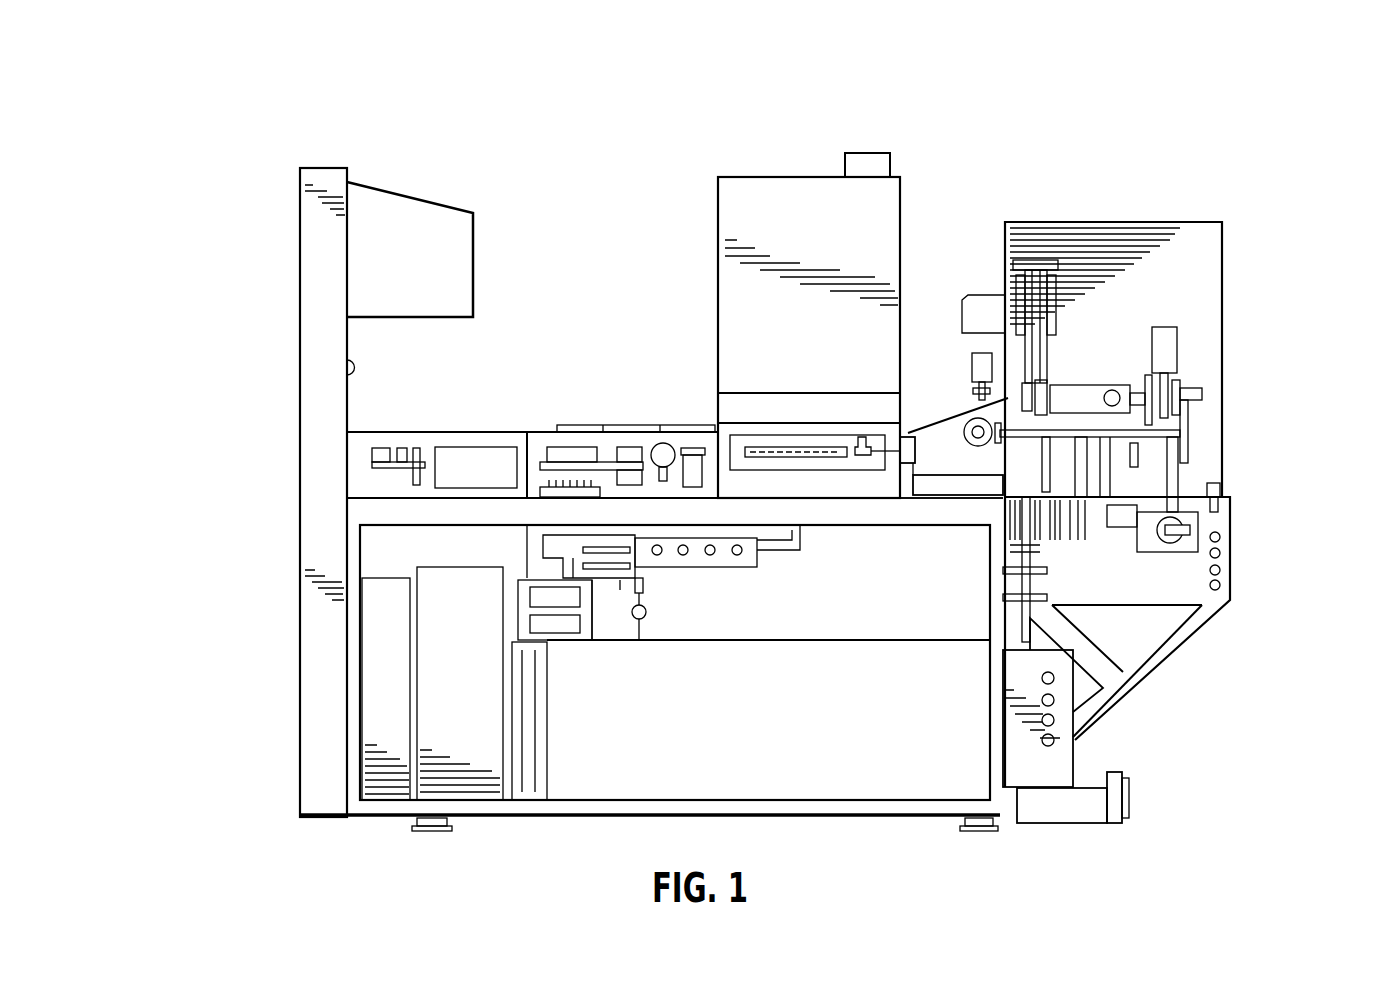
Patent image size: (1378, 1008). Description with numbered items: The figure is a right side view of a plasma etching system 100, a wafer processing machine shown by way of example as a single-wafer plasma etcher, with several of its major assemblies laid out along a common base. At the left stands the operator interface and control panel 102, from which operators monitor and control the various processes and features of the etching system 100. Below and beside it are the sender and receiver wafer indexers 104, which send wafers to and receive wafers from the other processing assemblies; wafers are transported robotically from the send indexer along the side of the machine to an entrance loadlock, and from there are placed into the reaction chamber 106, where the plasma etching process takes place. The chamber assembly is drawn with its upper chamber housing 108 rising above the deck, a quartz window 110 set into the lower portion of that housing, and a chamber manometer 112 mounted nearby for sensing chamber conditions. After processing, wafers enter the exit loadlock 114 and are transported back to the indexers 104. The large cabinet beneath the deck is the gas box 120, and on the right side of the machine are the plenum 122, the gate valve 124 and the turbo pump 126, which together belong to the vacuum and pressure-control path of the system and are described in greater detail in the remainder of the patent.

The plasma etching system 100 is at (310, 138).
The operator interface and control panel 102 is at (300, 300).
The sender and receiver wafer indexers 104 is at (300, 478).
The reaction chamber 106 is at (928, 266).
The upper chamber housing 108 is at (755, 222).
The quartz window 110 is at (762, 452).
The chamber manometer 112 is at (862, 432).
The exit loadlock 114 is at (543, 410).
The gas box 120 is at (763, 729).
The plenum 122 is at (940, 440).
The gate valve 124 is at (1047, 310).
The turbo pump 126 is at (1205, 435).